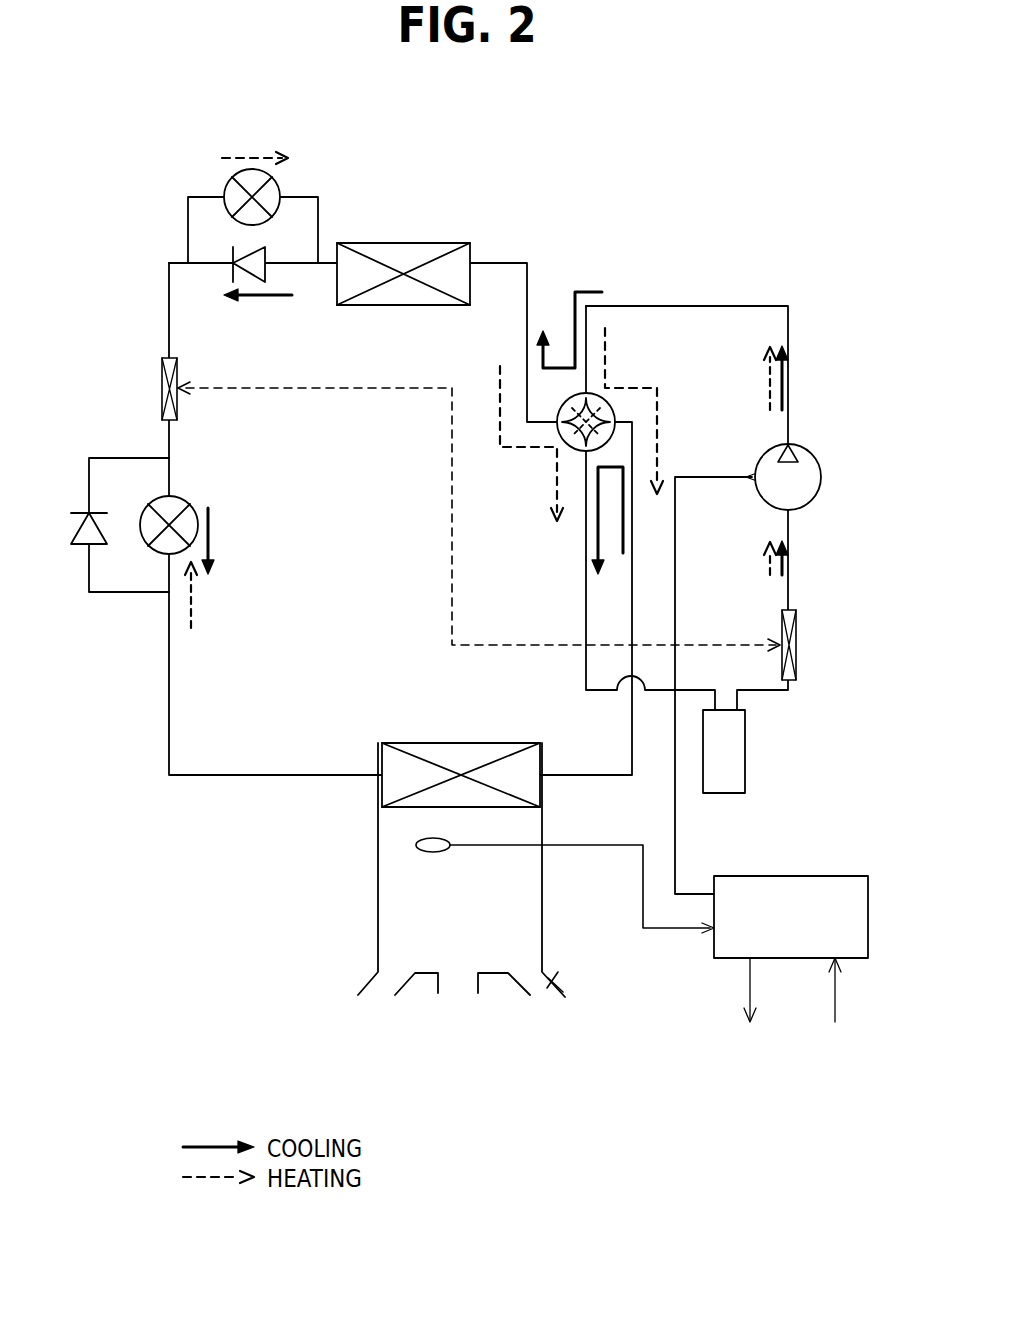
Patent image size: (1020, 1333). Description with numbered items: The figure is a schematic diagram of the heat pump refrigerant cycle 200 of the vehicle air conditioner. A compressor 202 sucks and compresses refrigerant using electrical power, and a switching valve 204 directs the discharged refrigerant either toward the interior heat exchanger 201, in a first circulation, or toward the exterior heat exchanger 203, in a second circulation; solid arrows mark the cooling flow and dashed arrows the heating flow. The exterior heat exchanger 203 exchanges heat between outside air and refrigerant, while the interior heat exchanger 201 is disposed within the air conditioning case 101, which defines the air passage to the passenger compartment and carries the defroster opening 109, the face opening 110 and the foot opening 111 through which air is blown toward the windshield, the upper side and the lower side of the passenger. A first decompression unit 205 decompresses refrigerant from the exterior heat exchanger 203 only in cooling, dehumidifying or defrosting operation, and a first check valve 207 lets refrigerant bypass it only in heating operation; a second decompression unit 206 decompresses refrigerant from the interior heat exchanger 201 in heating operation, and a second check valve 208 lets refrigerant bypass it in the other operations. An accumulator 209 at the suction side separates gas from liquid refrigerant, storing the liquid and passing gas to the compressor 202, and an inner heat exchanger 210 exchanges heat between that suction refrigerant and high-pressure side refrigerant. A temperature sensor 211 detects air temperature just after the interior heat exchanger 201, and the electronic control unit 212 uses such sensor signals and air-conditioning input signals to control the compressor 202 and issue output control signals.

The heat pump refrigerant cycle 200 is at (585, 248).
The interior heat exchanger 201 is at (428, 743).
The compressor 202 is at (822, 474).
The exterior heat exchanger 203 is at (393, 243).
The switching valve 204 is at (608, 400).
The first decompression unit 205 is at (150, 501).
The second decompression unit 206 is at (224, 182).
The first check valve 207 is at (73, 547).
The second check valve 208 is at (268, 272).
The accumulator 209 is at (746, 730).
The inner heat exchanger 210 is at (162, 377).
The temperature sensor 211 is at (440, 852).
The electronic control unit (ECU) 212 is at (820, 876).
The air conditioning case 101 is at (378, 862).
The defroster opening 109 is at (552, 980).
The face opening 110 is at (465, 995).
The foot opening 111 is at (382, 992).